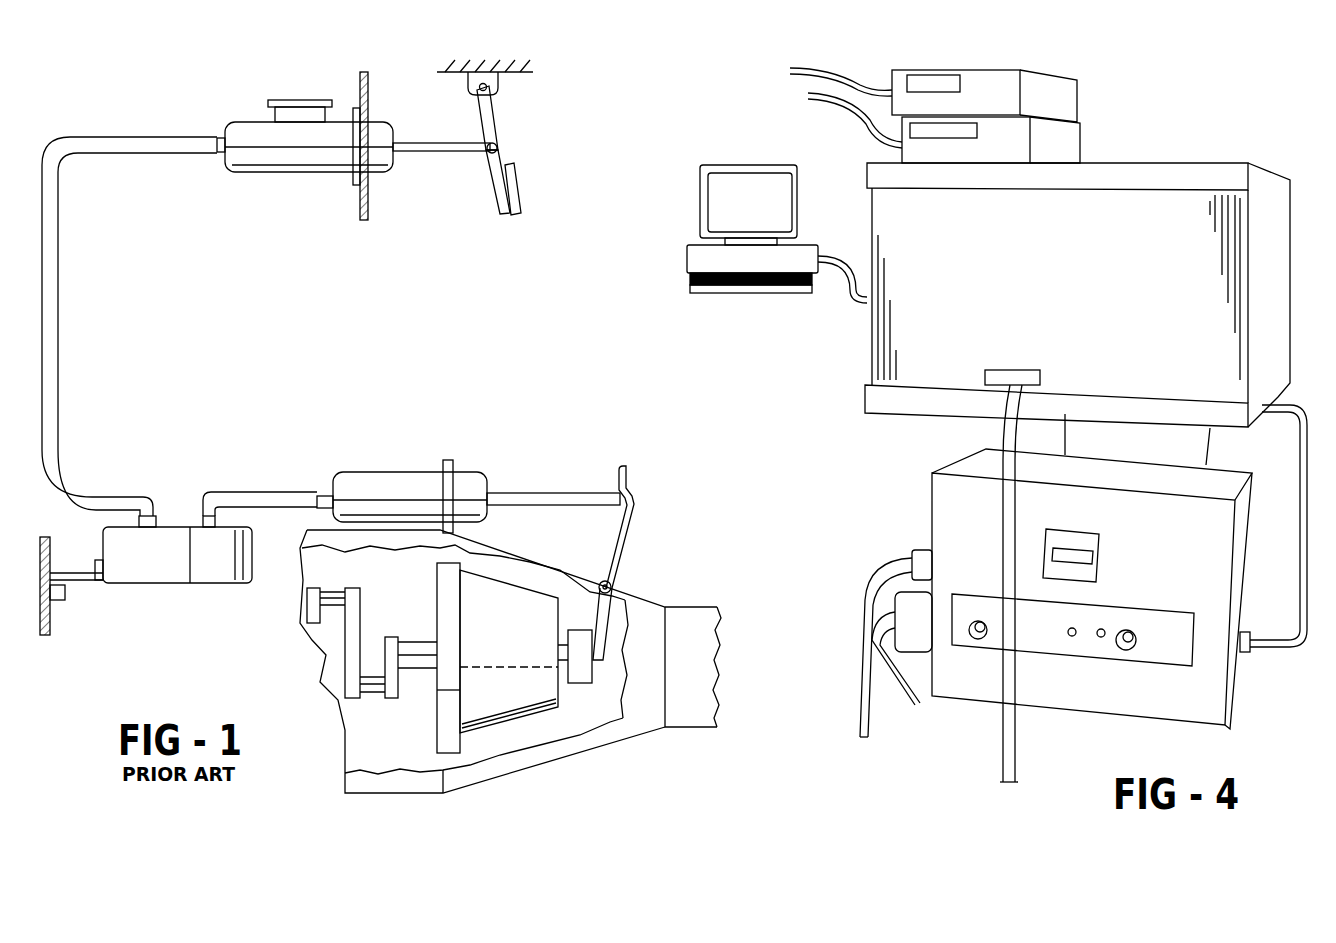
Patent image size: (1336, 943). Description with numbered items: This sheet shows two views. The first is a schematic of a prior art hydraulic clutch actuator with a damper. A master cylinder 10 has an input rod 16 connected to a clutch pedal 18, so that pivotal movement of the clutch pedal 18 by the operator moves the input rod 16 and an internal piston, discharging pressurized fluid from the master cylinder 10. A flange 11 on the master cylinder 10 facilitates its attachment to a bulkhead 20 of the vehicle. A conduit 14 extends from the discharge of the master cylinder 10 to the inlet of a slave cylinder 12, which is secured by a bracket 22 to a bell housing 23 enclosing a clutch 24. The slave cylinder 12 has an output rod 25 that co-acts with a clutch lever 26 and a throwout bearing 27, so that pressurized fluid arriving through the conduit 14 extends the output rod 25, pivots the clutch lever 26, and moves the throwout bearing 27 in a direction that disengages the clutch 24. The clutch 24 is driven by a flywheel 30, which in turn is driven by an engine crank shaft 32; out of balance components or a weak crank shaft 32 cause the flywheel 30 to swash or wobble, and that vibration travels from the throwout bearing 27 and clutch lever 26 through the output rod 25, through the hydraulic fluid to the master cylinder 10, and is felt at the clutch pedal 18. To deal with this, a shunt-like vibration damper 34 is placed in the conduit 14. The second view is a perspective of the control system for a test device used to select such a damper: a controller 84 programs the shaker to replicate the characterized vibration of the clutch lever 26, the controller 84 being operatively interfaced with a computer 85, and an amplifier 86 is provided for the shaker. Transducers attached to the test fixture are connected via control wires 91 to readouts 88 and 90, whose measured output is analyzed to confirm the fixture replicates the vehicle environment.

In FIG. 1, the master cylinder 10 is at (232, 172).
In FIG. 1, the flange 11 is at (350, 183).
In FIG. 1, the slave cylinder 12 is at (383, 472).
In FIG. 1, the conduit 14 is at (58, 296).
In FIG. 1, the input rod 16 is at (430, 153).
In FIG. 1, the clutch pedal 18 is at (497, 120).
In FIG. 1, the bulkhead 20 is at (368, 212).
In FIG. 1, the bracket 22 is at (455, 465).
In FIG. 1, the bell housing 23 is at (532, 782).
In FIG. 1, the clutch 24 is at (509, 651).
In FIG. 1, the output rod 25 is at (540, 493).
In FIG. 1, the clutch lever 26 is at (612, 560).
In FIG. 1, the throwout bearing 27 is at (575, 685).
In FIG. 1, the flywheel 30 is at (442, 710).
In FIG. 1, the engine crank shaft 32 is at (355, 605).
In FIG. 1, the vibration damper 34 is at (165, 575).
In FIG. 4, the controller 84 is at (1077, 295).
In FIG. 4, the computer 85 is at (688, 250).
In FIG. 4, the amplifier 86 is at (1056, 593).
In FIG. 4, the readout 88 is at (1075, 95).
In FIG. 4, the readout 90 is at (1083, 145).
In FIG. 4, the control wires 91 is at (843, 70).